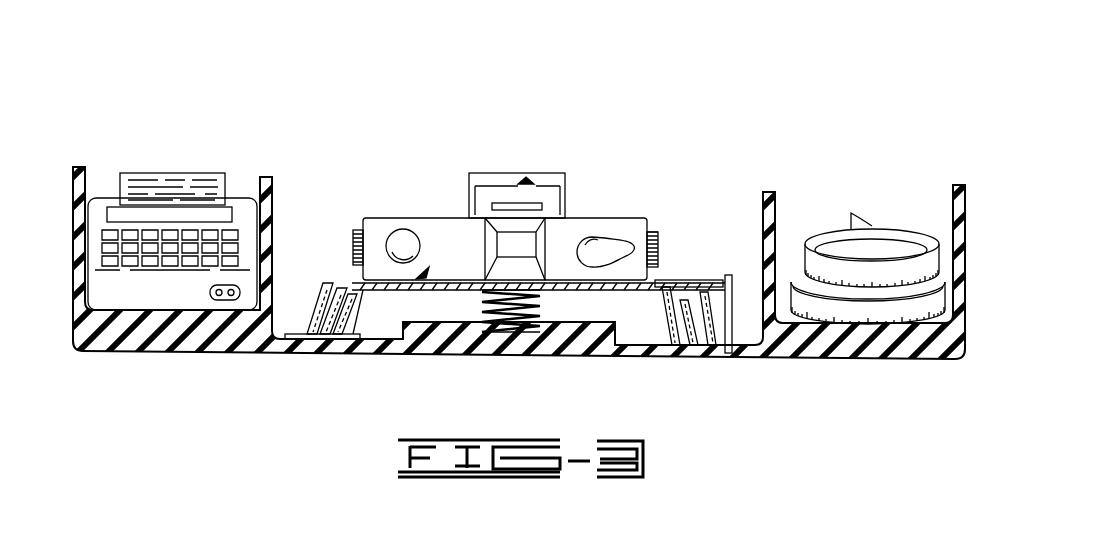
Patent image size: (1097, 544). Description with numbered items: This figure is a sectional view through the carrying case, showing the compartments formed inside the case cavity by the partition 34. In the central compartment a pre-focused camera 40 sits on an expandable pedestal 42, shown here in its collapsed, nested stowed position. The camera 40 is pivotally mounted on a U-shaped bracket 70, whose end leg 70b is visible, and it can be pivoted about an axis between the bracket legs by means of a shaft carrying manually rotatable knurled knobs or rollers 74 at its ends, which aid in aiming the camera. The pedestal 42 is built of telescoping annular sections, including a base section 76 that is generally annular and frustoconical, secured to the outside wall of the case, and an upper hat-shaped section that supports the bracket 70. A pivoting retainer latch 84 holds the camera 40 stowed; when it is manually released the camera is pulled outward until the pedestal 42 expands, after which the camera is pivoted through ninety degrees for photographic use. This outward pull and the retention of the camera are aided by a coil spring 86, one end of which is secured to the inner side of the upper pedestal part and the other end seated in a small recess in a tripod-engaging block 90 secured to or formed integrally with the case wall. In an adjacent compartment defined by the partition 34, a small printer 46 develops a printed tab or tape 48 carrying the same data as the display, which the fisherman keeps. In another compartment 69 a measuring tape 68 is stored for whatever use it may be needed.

The partition 34 is at (272, 182).
The pre-focused camera 40 is at (566, 226).
The expandable pedestal 42 is at (677, 268).
The printer 46 is at (240, 212).
The printed tab or tape 48 is at (185, 173).
The measuring tape 68 is at (876, 242).
The compartment 69 is at (782, 238).
The U-shaped bracket 70 is at (428, 268).
The end leg of bracket 70b is at (650, 233).
The knurled knobs or rollers 74 is at (353, 243).
The base section 76 is at (318, 313).
The pivoting retainer latch 84 is at (733, 303).
The coil spring 86 is at (510, 340).
The tripod-engaging block 90 is at (588, 347).